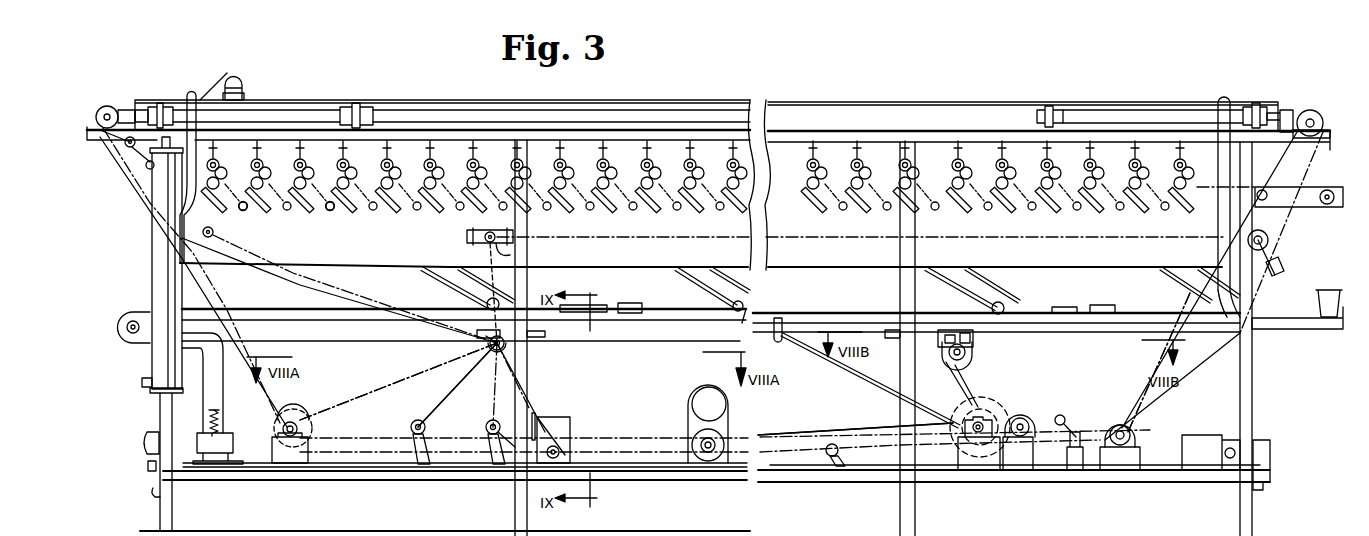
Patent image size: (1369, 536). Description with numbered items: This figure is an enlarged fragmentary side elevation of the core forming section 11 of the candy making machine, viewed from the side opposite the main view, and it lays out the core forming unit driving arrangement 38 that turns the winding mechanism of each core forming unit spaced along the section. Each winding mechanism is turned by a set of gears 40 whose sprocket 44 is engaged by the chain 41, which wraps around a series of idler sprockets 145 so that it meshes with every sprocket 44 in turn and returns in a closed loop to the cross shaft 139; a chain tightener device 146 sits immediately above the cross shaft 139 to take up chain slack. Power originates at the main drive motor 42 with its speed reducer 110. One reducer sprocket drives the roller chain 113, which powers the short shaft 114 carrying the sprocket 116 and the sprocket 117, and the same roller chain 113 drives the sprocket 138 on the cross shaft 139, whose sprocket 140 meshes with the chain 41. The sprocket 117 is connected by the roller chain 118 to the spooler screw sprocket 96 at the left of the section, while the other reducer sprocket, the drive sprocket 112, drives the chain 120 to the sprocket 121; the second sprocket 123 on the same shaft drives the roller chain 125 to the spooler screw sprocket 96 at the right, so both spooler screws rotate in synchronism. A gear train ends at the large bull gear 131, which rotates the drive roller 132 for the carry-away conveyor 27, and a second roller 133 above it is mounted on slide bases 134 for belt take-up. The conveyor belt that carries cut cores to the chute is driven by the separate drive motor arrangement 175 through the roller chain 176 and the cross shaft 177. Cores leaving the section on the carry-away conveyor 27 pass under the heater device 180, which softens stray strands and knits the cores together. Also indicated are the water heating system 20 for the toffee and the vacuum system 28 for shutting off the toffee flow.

The spooler screw sprocket 96 is at (106, 106).
The core forming section 11 is at (806, 101).
The water heating system 20 is at (187, 198).
The idler sprocket 145 is at (246, 211).
The core forming unit driving arrangement 38 is at (326, 222).
The set of gears 40 is at (386, 167).
The sprocket 44 is at (468, 233).
The chain tightener device 146 is at (510, 242).
The roller chain 118 is at (226, 306).
The chain 41 is at (350, 293).
The cross shaft 139 is at (490, 340).
The sprocket 138 is at (507, 347).
The sprocket 140 is at (457, 385).
The roller chain 113 is at (403, 377).
The sprocket 116 is at (313, 417).
The sprocket 117 is at (280, 426).
The short shaft 114 is at (310, 440).
The vacuum system 28 is at (201, 433).
The main drive motor 42 is at (693, 398).
The speed reducer 110 is at (731, 427).
The drive sprocket 112 is at (712, 456).
The slide base 134 is at (928, 335).
The second roller 133 is at (974, 357).
The carry-away conveyor 27 is at (977, 397).
The bull gear 131 is at (1003, 405).
The drive roller 132 is at (955, 410).
The chain 120 is at (867, 425).
The second sprocket 123 is at (1106, 423).
The sprocket 121 is at (1138, 450).
The roller chain 125 is at (1189, 294).
The separate drive motor arrangement 175 is at (1213, 437).
The roller chain 176 is at (1263, 347).
The cross shaft 177 is at (1260, 228).
The heater device 180 is at (1324, 284).